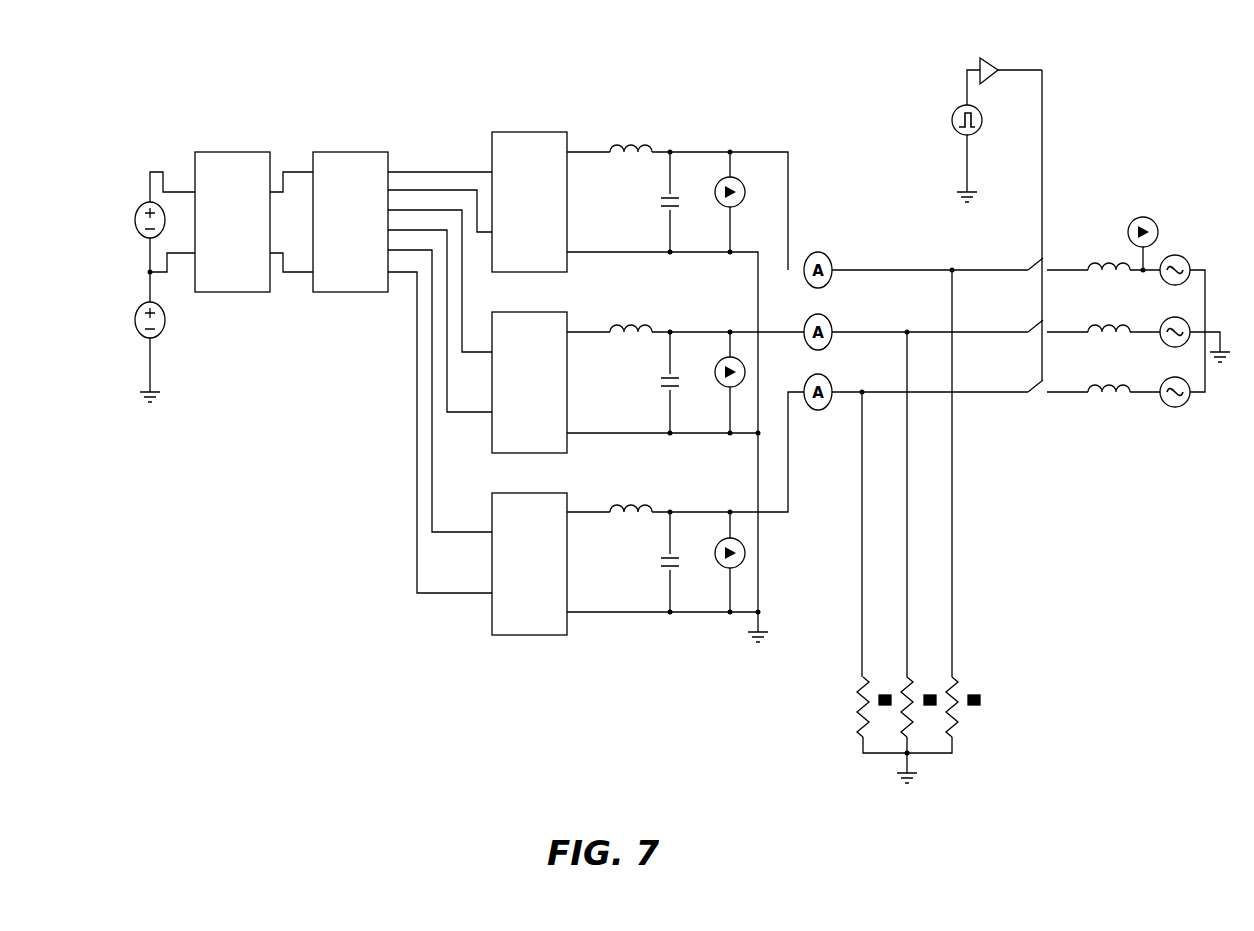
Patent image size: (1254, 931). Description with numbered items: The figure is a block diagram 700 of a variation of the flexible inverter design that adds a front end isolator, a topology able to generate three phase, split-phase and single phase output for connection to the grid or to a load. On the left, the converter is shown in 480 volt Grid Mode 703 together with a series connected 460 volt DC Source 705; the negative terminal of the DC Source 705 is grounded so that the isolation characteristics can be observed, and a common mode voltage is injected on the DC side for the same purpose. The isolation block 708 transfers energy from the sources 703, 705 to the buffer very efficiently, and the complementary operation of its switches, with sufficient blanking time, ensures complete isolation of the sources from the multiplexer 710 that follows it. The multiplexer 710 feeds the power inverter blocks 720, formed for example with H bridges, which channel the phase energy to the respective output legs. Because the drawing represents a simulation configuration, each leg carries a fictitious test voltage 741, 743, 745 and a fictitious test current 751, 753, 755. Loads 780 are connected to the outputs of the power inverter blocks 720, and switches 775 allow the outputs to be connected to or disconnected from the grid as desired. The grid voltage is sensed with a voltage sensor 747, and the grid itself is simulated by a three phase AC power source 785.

The block diagram 700 is at (674, 403).
The 480V grid mode source 703 is at (166, 326).
The 460V DC source 705 is at (165, 204).
The isolation block 708 is at (247, 294).
The multiplexer 710 is at (353, 294).
The power inverter blocks 720 is at (560, 116).
The fictitious test voltage 741 is at (742, 178).
The fictitious test voltage 743 is at (738, 357).
The fictitious test voltage 745 is at (745, 557).
The voltage sensor 747 is at (1150, 217).
The fictitious test current 751 is at (832, 268).
The fictitious test current 753 is at (832, 333).
The fictitious test current 755 is at (832, 392).
The switches 775 is at (1043, 420).
The loads 780 is at (1002, 703).
The three phase AC power source 785 is at (1137, 420).
The 460 V source label 460 is at (132, 196).
The 480 V source label 480 is at (132, 294).